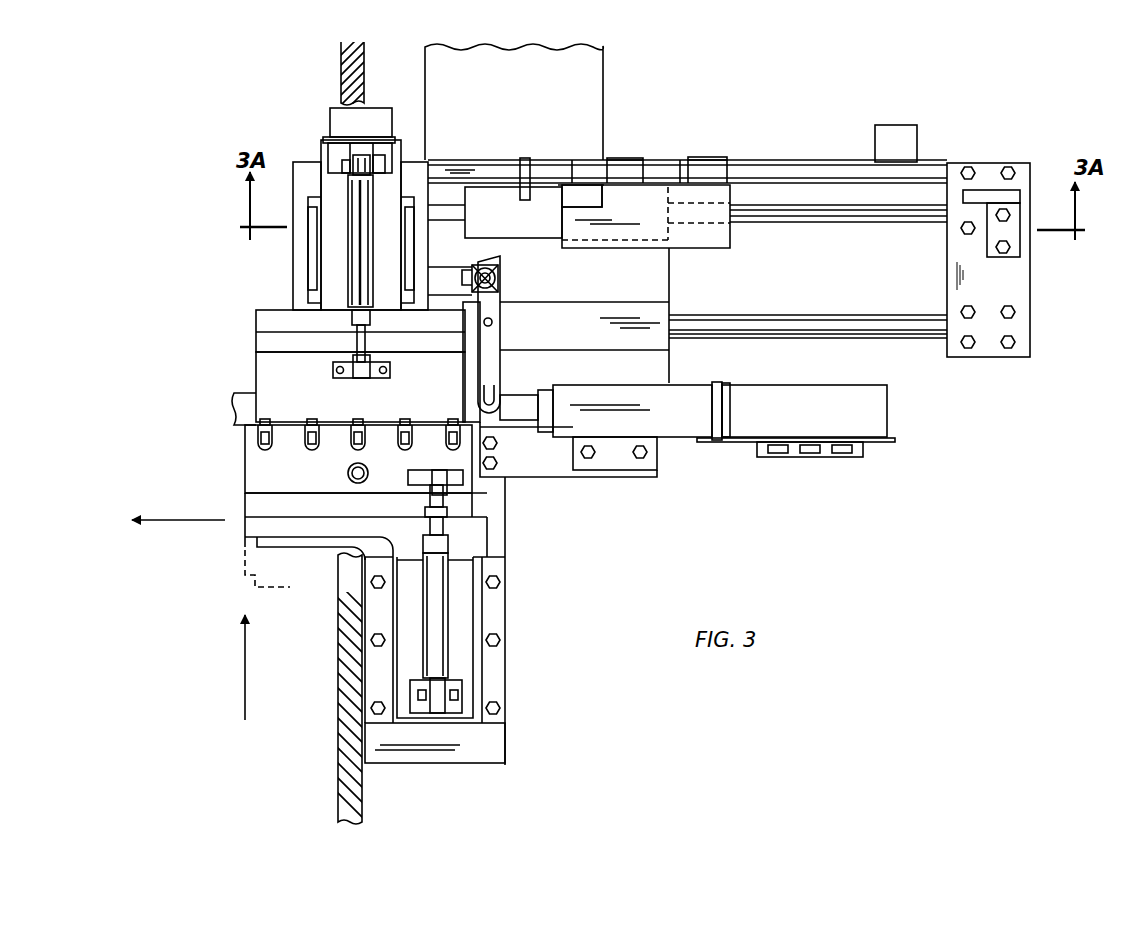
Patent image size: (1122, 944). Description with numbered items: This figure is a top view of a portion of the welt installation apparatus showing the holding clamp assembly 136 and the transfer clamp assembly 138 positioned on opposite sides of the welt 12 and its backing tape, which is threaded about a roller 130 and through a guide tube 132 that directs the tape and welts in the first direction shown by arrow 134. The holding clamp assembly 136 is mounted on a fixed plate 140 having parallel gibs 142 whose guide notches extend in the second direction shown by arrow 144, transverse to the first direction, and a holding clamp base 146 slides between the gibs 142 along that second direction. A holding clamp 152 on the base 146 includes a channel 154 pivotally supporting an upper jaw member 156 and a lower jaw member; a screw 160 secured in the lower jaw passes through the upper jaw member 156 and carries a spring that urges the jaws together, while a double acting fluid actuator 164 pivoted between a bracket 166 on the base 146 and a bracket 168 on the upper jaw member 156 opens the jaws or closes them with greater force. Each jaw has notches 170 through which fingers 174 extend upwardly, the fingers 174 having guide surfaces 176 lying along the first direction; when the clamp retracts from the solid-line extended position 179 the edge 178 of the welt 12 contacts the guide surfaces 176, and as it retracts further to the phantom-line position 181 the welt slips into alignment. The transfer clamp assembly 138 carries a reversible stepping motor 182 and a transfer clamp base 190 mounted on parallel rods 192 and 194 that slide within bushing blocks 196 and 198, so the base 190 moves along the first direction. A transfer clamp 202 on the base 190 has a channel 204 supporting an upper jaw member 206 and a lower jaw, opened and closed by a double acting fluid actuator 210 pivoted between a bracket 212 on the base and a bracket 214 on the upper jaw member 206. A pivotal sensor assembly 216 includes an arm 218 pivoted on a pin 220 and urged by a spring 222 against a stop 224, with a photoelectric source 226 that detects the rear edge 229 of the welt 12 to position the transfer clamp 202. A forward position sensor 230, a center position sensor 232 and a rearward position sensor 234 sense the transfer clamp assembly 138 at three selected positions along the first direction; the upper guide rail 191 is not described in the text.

The welt 12 is at (256, 392).
The roller 130 is at (822, 400).
The guide tube 132 is at (688, 397).
The arrow 134 is at (168, 521).
The holding clamp assembly 136 is at (527, 565).
The transfer clamp assembly 138 is at (287, 180).
The fixed plate 140 is at (505, 748).
The gibs 142 is at (380, 607).
The arrow 144 is at (245, 668).
The holding clamp base 146 is at (468, 655).
The holding clamp 152 is at (243, 456).
The channel 154 is at (257, 505).
The upper jaw member 156 is at (288, 475).
The screw 160 is at (350, 478).
The double acting fluid actuator 164 is at (437, 622).
The bracket 166 is at (425, 700).
The bracket 168 is at (420, 480).
The notches 170 is at (312, 425).
The fingers 174 is at (356, 447).
The guide surfaces 176 is at (358, 425).
The edge 178 is at (265, 425).
The extended position 179 is at (245, 540).
The retracted position 181 is at (245, 578).
The reversible stepping motor 182 is at (532, 124).
The transfer clamp base 190 is at (418, 180).
The upper guide rail 191 is at (772, 178).
The rod 192 is at (848, 215).
The rod 194 is at (852, 327).
The bushing block 196 is at (495, 208).
The bushing block 198 is at (654, 318).
The transfer clamp 202 is at (254, 355).
The channel 204 is at (265, 335).
The upper jaw member 206 is at (443, 370).
The double acting fluid actuator 210 is at (355, 242).
The bracket 212 is at (384, 152).
The bracket 214 is at (372, 356).
The pivotal sensor assembly 216 is at (507, 338).
The arm 218 is at (500, 313).
The pin 220 is at (500, 280).
The spring 222 is at (490, 266).
The stop 224 is at (470, 283).
The photoelectric source 226 is at (500, 395).
The rear edge 229 is at (480, 420).
The forward position sensor 230 is at (585, 192).
The center position sensor 232 is at (625, 168).
The rearward position sensor 234 is at (706, 170).